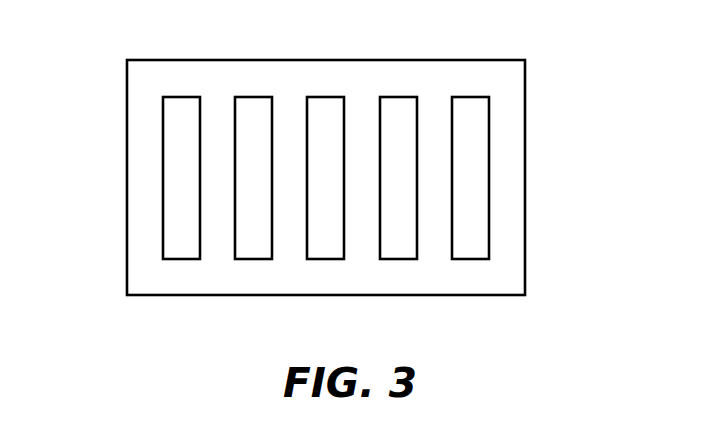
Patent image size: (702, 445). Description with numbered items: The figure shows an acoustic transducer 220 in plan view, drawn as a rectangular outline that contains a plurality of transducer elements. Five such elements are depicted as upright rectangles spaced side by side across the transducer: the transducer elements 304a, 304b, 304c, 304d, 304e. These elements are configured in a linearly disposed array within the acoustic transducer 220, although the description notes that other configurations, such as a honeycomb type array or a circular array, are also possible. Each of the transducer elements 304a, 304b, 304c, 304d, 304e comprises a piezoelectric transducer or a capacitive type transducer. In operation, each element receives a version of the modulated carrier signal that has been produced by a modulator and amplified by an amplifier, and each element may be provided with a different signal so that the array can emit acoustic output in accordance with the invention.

The acoustic transducer 220 is at (465, 59).
The transducer element 304a is at (163, 191).
The transducer element 304b is at (267, 259).
The transducer element 304c is at (320, 97).
The transducer element 304d is at (397, 259).
The transducer element 304e is at (489, 173).